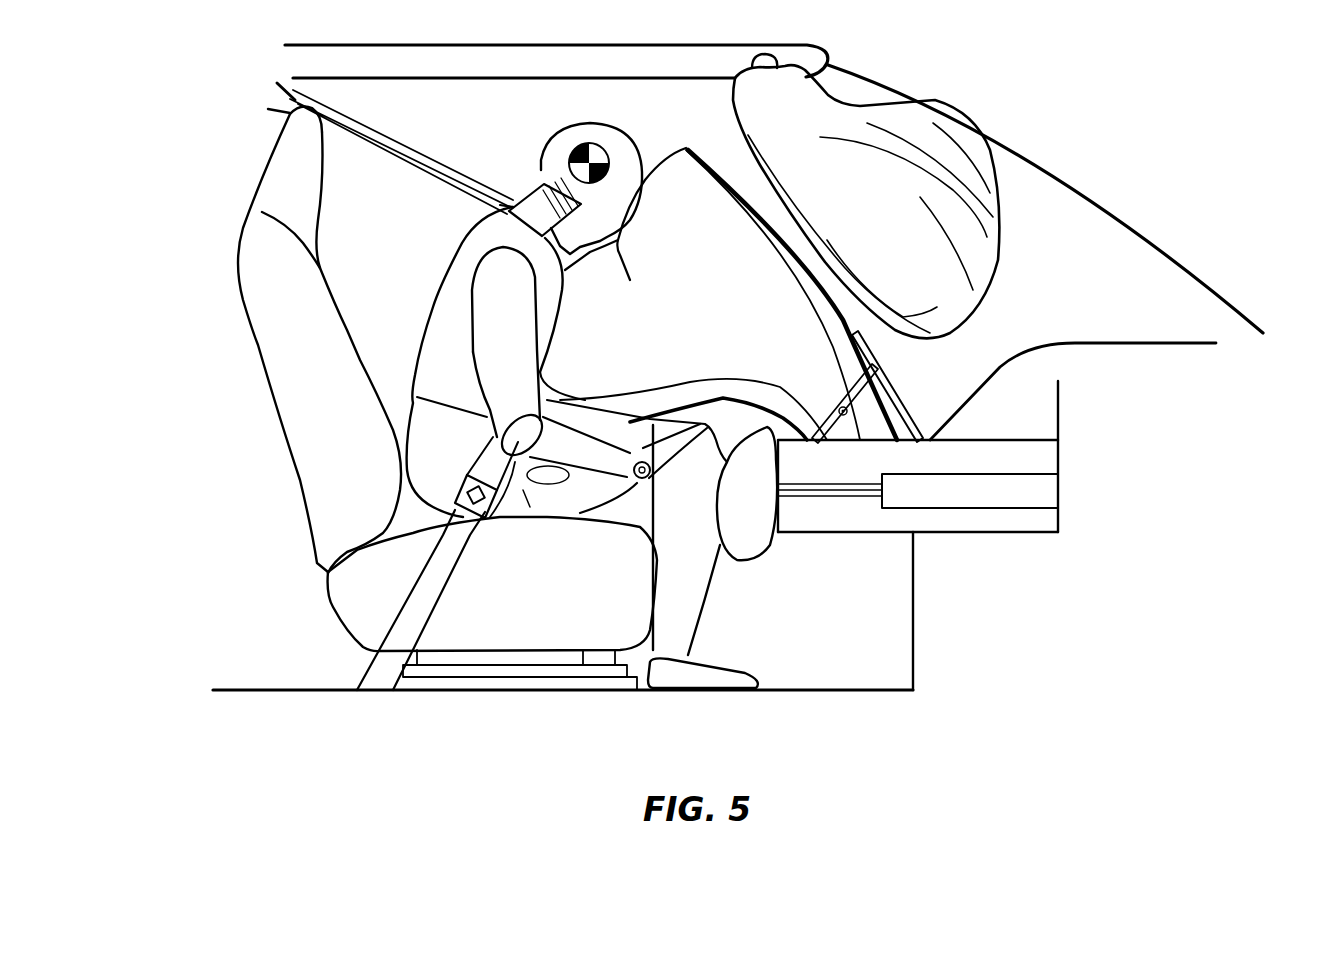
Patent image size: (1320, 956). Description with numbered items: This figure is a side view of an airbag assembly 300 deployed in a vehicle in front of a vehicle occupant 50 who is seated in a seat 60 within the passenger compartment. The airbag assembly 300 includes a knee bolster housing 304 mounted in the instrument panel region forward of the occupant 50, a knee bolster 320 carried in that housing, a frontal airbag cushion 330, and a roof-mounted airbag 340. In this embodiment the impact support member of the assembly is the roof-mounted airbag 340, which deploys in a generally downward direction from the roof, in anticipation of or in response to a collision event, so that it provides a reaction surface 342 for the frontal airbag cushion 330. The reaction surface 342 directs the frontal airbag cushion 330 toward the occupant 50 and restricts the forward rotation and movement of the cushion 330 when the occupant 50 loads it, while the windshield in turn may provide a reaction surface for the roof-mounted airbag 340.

The vehicle occupant 50 is at (489, 298).
The seat 60 is at (300, 380).
The airbag assembly 300 is at (818, 247).
The knee bolster housing 304 is at (1060, 455).
The knee bolster 320 is at (822, 542).
The frontal airbag cushion 330 is at (710, 280).
The roof-mounted airbag 340 is at (897, 211).
The reaction surface 342 is at (790, 261).